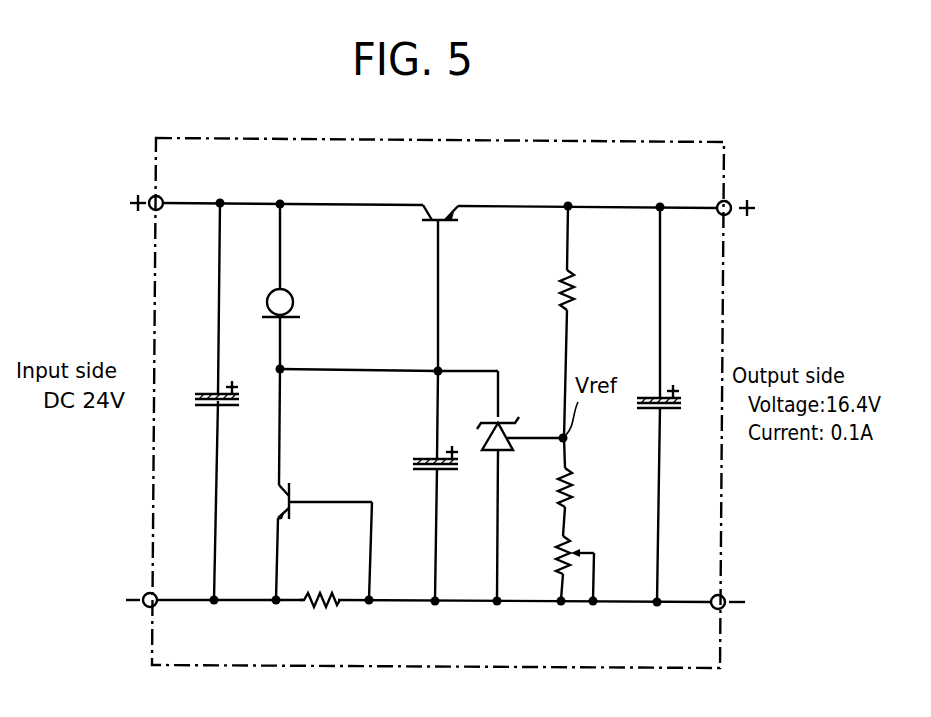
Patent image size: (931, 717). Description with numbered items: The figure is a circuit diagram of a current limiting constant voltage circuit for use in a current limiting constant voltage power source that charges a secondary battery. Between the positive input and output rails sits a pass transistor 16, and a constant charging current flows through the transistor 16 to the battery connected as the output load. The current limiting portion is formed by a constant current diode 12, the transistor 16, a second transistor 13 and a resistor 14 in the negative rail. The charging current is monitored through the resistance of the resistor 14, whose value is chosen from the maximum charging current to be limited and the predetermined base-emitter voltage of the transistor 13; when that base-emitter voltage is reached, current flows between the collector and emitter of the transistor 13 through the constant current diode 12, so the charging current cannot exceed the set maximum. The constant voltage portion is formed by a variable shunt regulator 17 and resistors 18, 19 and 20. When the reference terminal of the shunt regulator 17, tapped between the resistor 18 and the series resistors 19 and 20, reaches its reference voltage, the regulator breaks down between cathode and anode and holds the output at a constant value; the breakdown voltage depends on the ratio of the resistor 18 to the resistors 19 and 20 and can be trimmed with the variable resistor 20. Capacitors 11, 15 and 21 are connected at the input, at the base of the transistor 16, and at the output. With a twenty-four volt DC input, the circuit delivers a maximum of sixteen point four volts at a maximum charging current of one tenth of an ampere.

The capacitor 11 is at (206, 393).
The constant current diode 12 is at (291, 292).
The transistor 13 is at (286, 503).
The resistor 14 is at (320, 606).
The capacitor 15 is at (423, 470).
The transistor 16 is at (447, 219).
The variable shunt regulator 17 is at (491, 452).
The resistor 18 is at (557, 292).
The resistor 19 is at (567, 483).
The variable resistor 20 is at (561, 553).
The capacitor 21 is at (654, 410).